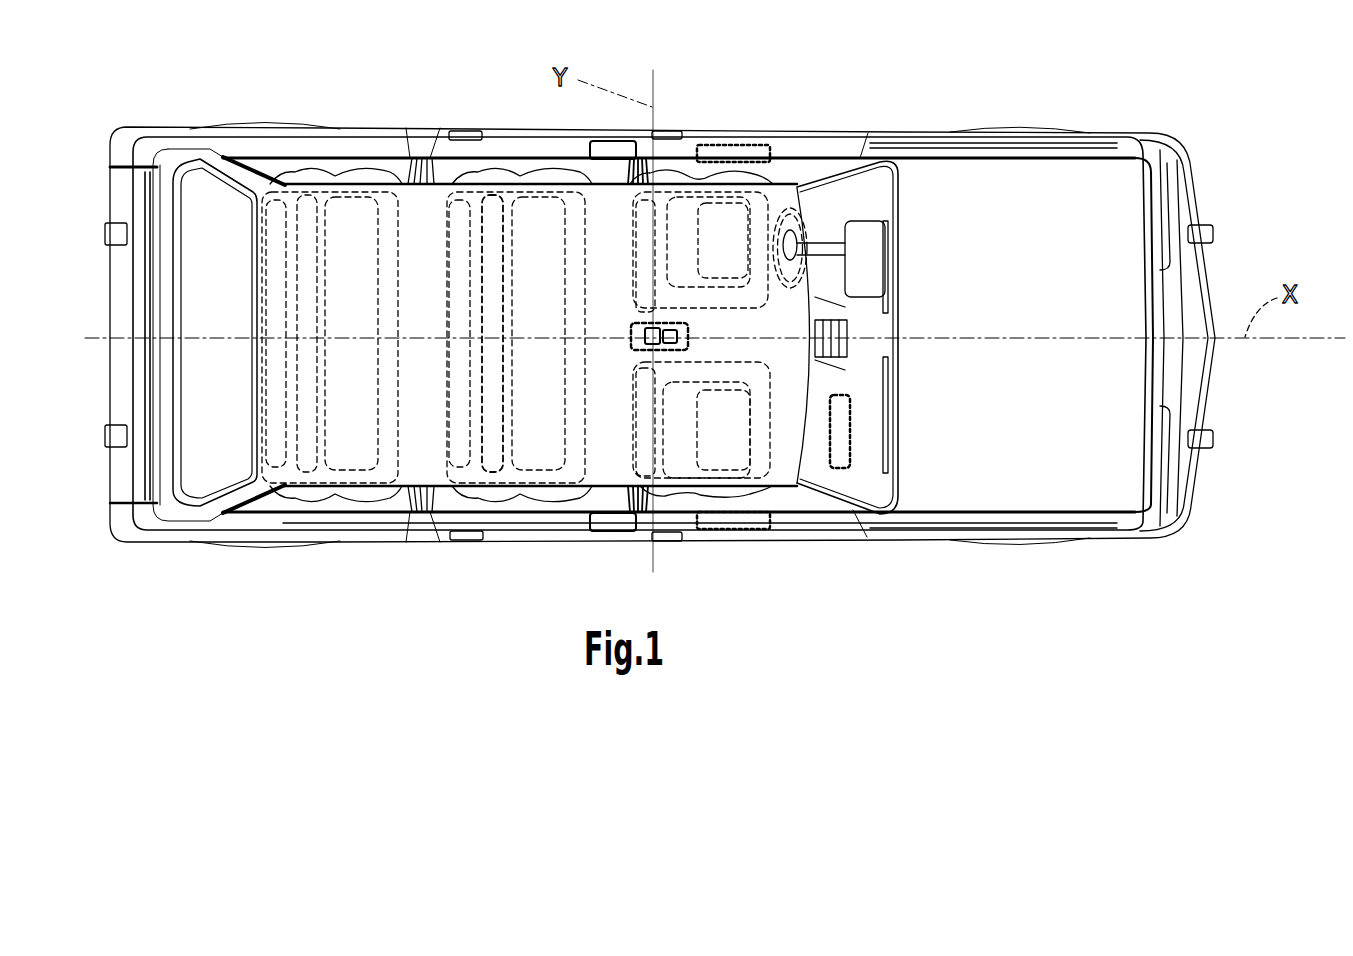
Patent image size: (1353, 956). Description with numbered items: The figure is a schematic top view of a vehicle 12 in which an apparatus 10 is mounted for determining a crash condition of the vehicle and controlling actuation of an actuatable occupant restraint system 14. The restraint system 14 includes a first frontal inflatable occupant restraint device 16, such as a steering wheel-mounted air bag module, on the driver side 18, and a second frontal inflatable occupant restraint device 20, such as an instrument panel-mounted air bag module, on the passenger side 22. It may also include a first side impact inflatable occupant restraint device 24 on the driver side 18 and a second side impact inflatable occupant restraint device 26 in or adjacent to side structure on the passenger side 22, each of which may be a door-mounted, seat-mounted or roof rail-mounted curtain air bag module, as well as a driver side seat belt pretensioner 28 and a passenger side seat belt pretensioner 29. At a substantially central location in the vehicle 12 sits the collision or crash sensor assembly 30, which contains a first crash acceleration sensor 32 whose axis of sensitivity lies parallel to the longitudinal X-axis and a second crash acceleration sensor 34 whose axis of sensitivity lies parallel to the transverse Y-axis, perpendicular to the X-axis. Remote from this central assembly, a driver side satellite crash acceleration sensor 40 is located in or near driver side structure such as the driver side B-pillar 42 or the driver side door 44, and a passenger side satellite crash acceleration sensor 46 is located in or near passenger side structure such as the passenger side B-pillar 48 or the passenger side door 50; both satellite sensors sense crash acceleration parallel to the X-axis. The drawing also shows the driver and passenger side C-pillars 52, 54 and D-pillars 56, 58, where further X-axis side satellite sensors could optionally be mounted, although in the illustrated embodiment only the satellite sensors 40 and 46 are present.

The apparatus 10 is at (478, 100).
The vehicle 12 is at (1083, 540).
The actuatable occupant restraint system 14 is at (808, 563).
The first frontal inflatable occupant restraint device 16 is at (797, 235).
The driver side 18 is at (783, 315).
The second frontal inflatable occupant restraint device 20 is at (842, 431).
The passenger side 22 is at (780, 440).
The first side impact inflatable occupant restraint device 24 is at (727, 140).
The second side impact inflatable occupant restraint device 26 is at (719, 533).
The driver side seat belt pretensioner 28 is at (723, 193).
The passenger side seat belt pretensioner 29 is at (717, 482).
The crash sensor assembly 30 is at (630, 355).
The first crash acceleration sensor 32 is at (647, 327).
The second crash acceleration sensor 34 is at (668, 326).
The driver side satellite crash acceleration sensor 40 is at (617, 148).
The driver side vehicle B-pillar 42 is at (640, 180).
The driver side door 44 is at (803, 134).
The passenger side satellite crash acceleration sensor 46 is at (608, 522).
The passenger side B-pillar 48 is at (625, 497).
The passenger side door 50 is at (763, 537).
The driver side C-pillar 52 is at (422, 180).
The passenger side C-pillar 54 is at (417, 517).
The driver side D-pillar 56 is at (245, 170).
The passenger side D-pillar 58 is at (243, 497).